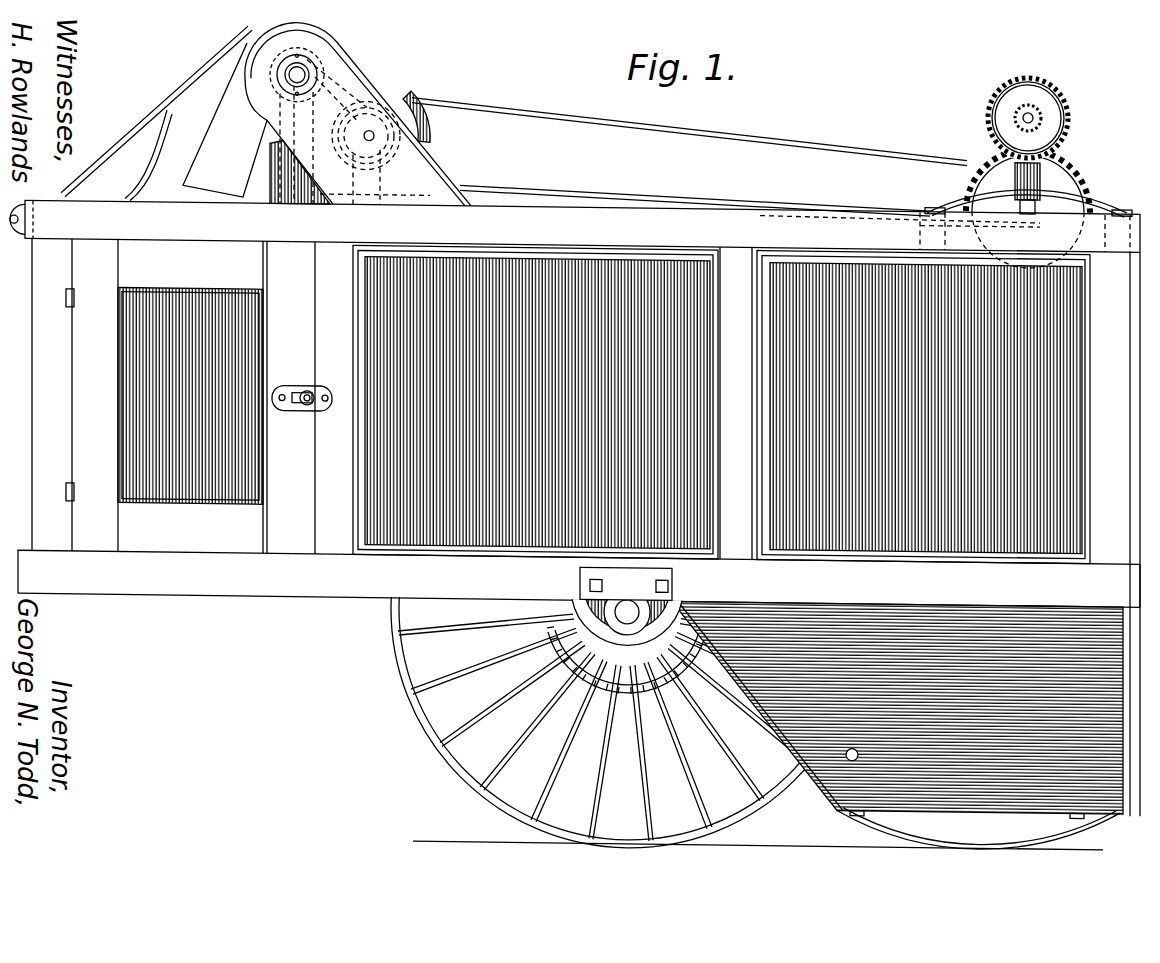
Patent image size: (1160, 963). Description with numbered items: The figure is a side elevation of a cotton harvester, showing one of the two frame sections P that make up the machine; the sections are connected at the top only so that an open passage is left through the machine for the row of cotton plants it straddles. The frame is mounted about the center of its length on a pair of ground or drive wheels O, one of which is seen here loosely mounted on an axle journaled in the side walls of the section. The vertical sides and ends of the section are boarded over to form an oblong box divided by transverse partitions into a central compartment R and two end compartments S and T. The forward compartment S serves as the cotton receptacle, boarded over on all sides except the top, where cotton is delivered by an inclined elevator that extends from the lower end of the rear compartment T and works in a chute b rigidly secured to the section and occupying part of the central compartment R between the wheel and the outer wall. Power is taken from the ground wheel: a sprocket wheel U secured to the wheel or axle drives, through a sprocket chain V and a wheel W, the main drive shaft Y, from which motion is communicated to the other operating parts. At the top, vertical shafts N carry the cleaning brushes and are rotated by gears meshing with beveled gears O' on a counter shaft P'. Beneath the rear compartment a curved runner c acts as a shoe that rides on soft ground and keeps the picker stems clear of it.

The chute b is at (319, 73).
The main drive shaft Y is at (380, 125).
The wheel W is at (425, 117).
The sprocket chain V is at (456, 174).
The counter shaft P' is at (993, 121).
The beveled gear O' is at (1044, 117).
The vertical shaft N is at (1036, 203).
The forward compartment S is at (208, 440).
The frame section P is at (535, 402).
The central compartment R is at (537, 403).
The rear compartment T is at (923, 407).
The ground wheel O is at (608, 611).
The sprocket wheel U is at (568, 674).
The runner c is at (953, 838).